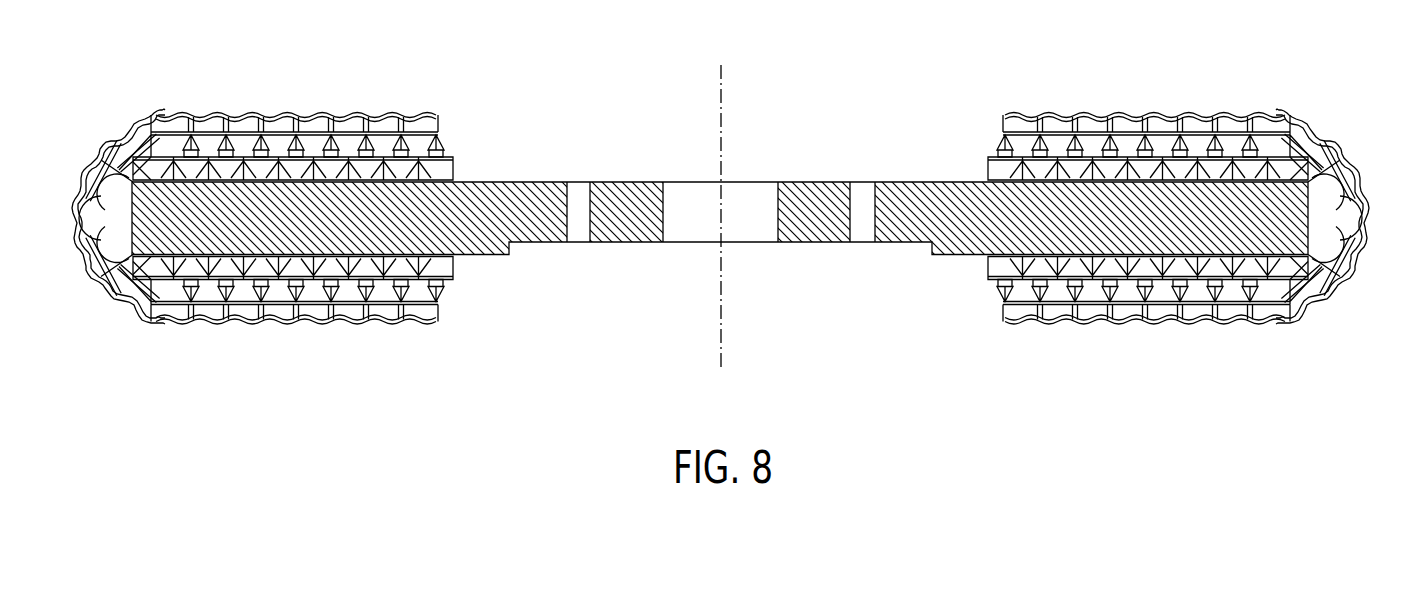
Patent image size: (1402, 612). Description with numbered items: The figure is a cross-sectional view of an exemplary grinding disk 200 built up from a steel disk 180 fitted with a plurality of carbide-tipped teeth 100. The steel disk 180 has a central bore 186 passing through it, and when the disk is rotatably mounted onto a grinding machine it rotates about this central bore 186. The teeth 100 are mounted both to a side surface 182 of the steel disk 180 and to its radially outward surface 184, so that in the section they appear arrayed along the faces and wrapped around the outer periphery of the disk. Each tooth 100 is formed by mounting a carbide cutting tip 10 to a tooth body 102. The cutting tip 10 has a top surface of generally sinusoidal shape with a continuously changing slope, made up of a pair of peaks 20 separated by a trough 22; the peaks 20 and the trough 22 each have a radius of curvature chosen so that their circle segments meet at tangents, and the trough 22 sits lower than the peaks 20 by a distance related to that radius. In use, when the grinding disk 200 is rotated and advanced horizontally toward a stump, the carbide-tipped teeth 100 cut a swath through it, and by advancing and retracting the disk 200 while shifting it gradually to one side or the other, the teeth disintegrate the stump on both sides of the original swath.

The grinding disk 200 is at (1105, 210).
The carbide-tipped tooth 100 is at (1105, 333).
The carbide cutting tip 10 is at (1015, 310).
The peaks 20 is at (1047, 318).
The trough 22 is at (1060, 318).
The tooth body 102 is at (1020, 293).
The steel disk 180 is at (912, 192).
The side surface 182 is at (954, 180).
The radially outward surface 184 is at (1357, 188).
The central bore 186 is at (778, 198).